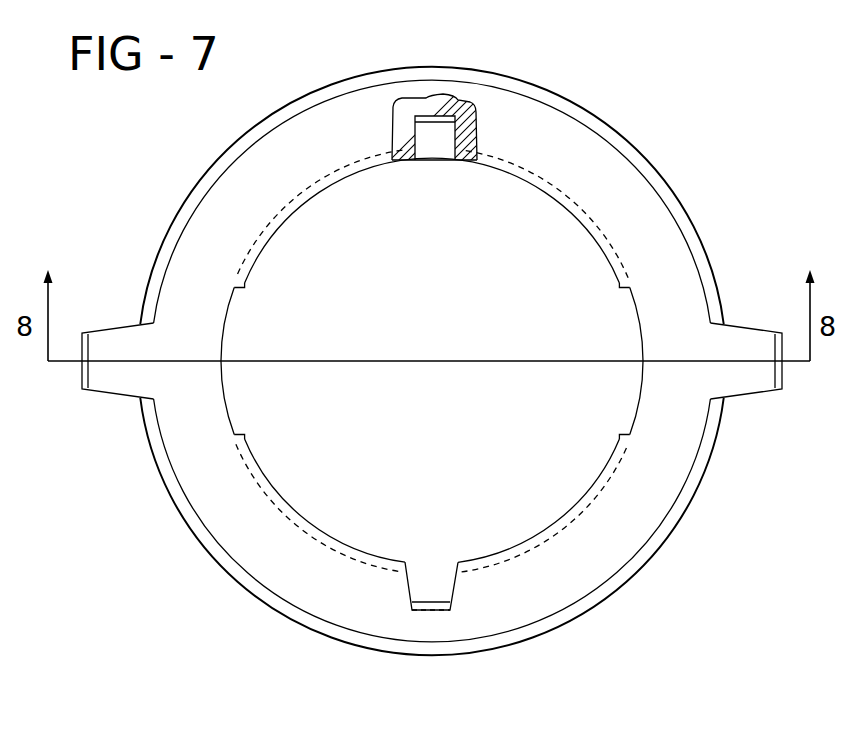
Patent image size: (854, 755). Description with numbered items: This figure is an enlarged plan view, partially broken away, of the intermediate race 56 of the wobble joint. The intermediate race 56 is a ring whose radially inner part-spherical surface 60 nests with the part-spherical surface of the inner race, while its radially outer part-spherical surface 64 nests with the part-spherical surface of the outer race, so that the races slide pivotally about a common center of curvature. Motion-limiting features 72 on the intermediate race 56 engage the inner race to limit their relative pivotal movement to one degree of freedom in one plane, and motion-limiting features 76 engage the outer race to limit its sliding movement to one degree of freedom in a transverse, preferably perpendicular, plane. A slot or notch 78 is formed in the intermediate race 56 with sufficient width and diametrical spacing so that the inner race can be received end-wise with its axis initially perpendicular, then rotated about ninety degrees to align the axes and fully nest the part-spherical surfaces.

The intermediate race 56 is at (652, 140).
The part-spherical surface 60 is at (400, 160).
The part-spherical surface 64 is at (648, 550).
The motion-limiting feature 72 is at (451, 148).
The motion-limiting feature 76 is at (748, 343).
The slot or notch 78 is at (223, 347).